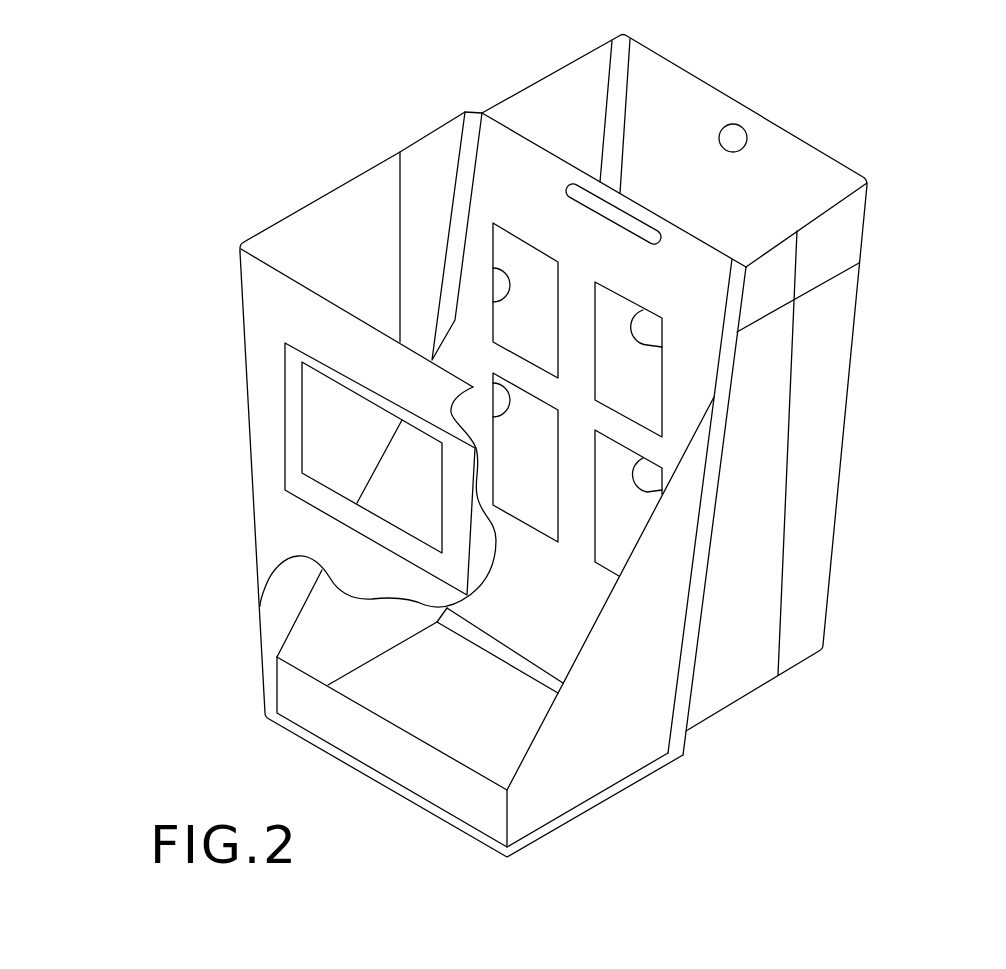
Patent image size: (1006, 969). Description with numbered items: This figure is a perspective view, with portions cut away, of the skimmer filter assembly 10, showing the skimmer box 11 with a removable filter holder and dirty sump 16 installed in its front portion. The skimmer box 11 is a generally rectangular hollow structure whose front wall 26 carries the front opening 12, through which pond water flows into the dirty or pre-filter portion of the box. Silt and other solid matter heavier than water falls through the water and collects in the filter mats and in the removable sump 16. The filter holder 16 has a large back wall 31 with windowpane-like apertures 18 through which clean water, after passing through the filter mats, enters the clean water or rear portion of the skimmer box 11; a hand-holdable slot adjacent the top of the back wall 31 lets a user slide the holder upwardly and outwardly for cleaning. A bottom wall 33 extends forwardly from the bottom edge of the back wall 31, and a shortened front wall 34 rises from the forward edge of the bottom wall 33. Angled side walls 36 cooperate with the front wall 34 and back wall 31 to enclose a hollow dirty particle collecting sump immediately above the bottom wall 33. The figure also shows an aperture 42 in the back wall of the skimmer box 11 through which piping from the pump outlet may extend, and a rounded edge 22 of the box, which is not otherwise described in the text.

The skimmer filter assembly 10 is at (845, 142).
The skimmer box 11 is at (853, 345).
The front opening 12 is at (297, 425).
The removable filter holder and dirty sump 16 is at (560, 157).
The windowpane-like apertures 18 is at (496, 380).
The rounded edge 22 is at (462, 119).
The front wall 26 is at (254, 530).
The back wall 31 is at (660, 289).
The bottom wall 33 is at (445, 717).
The front wall 34 is at (282, 698).
The side wall 36 is at (298, 636).
The aperture 42 is at (745, 128).